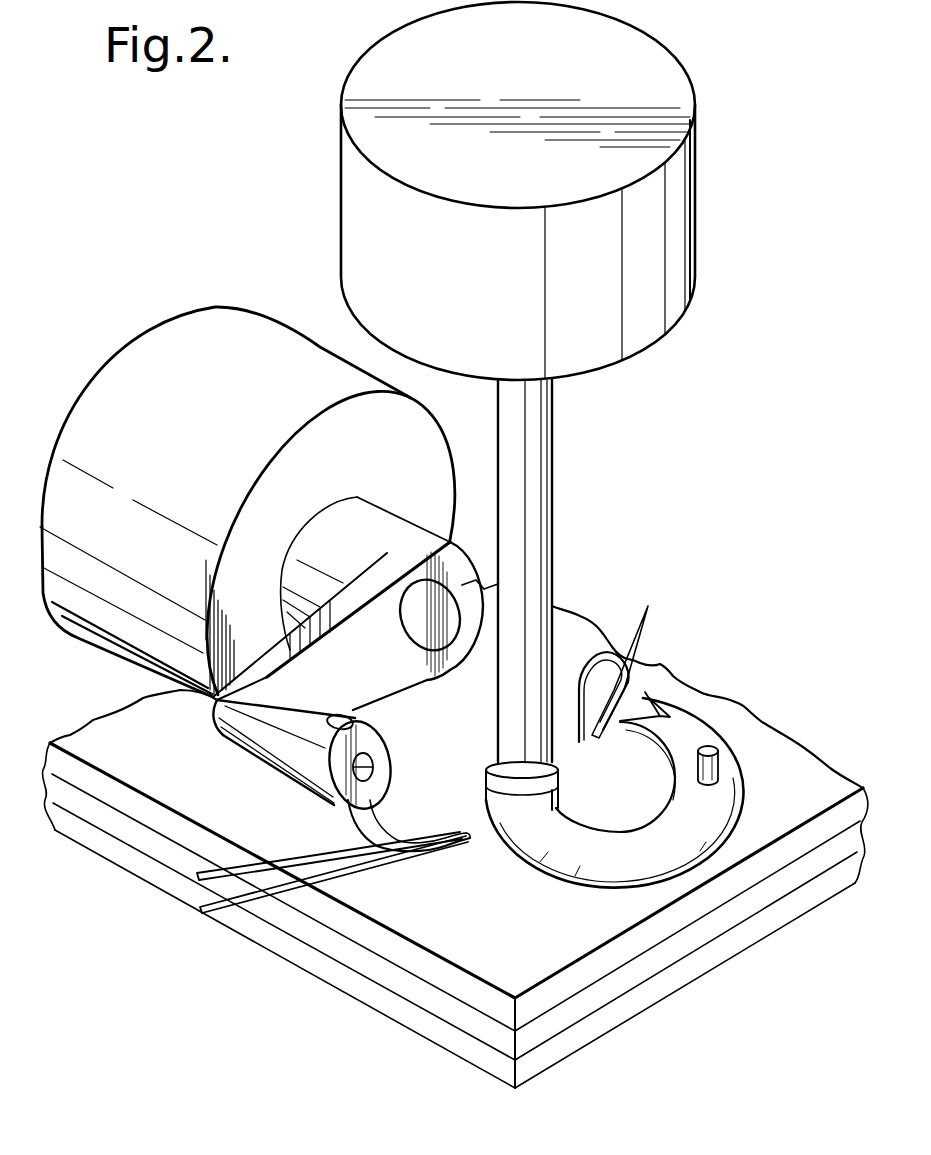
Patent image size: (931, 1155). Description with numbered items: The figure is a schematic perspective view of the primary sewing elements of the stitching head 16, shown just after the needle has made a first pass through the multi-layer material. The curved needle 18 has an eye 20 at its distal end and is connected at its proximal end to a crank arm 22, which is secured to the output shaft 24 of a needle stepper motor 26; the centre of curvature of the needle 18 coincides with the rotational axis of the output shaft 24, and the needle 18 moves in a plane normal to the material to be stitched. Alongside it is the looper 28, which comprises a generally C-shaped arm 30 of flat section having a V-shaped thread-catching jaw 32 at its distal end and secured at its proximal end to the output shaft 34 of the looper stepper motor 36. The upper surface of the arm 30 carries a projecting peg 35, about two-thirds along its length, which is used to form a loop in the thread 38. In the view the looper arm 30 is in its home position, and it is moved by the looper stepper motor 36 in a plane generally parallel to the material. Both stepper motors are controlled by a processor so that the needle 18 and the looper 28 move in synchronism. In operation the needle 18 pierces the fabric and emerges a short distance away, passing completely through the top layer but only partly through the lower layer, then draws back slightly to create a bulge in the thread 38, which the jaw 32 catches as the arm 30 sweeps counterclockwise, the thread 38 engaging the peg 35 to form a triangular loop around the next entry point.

The stitching head 16 is at (198, 232).
The curved needle 18 is at (380, 817).
The eye 20 is at (625, 658).
The crank arm 22 is at (387, 673).
The output shaft 24 is at (433, 617).
The needle stepper motor 26 is at (125, 390).
The looper 28 is at (600, 505).
The C-shaped arm 30 is at (587, 862).
The thread-catching jaw 32 is at (650, 693).
The output shaft 34 is at (528, 438).
The projecting peg 35 is at (720, 760).
The looper stepper motor 36 is at (676, 104).
The thread 38 is at (363, 880).